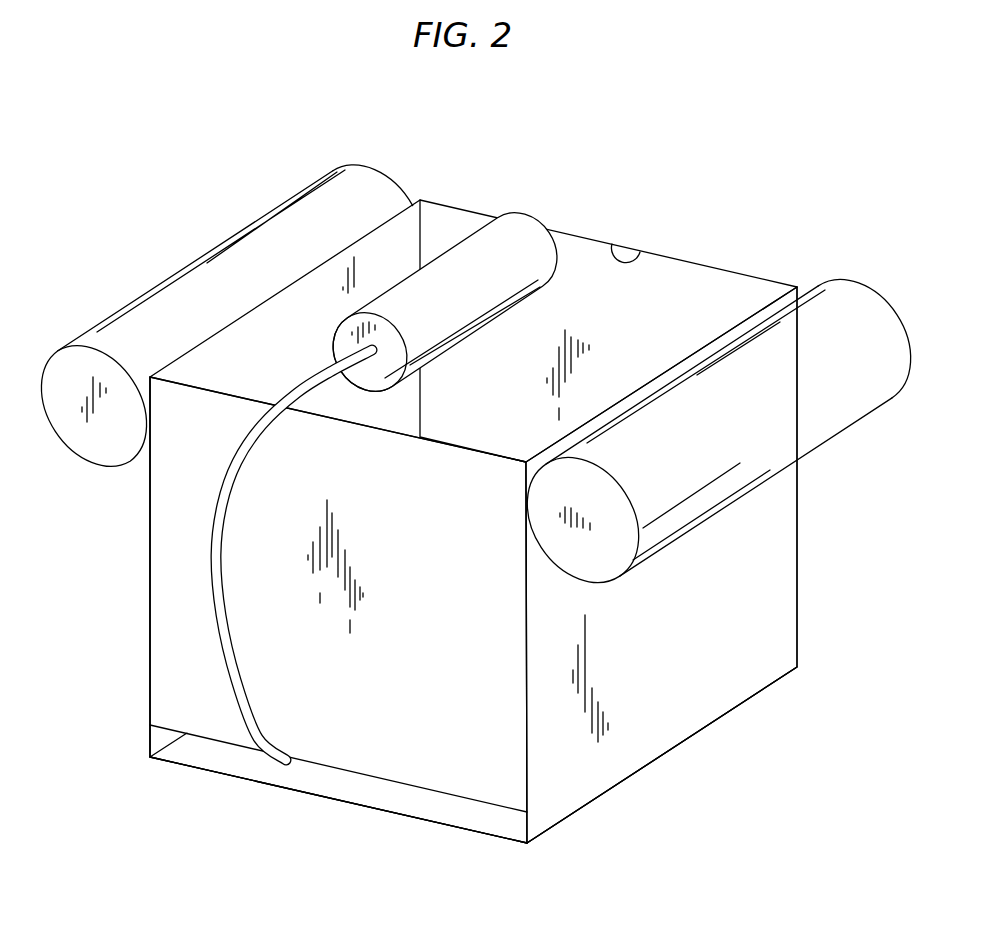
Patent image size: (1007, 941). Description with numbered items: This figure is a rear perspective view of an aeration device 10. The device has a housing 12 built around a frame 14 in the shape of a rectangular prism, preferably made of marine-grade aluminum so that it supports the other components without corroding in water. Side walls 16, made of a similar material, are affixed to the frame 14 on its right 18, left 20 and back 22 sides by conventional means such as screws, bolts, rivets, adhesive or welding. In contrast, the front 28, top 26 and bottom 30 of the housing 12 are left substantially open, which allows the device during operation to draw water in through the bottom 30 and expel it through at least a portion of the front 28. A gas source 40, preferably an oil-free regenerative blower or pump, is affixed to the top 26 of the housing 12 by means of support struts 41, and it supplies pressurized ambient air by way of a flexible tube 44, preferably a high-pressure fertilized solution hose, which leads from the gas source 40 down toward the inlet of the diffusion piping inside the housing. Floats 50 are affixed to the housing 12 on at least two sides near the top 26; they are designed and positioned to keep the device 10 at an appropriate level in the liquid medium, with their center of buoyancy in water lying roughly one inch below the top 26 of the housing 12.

The device 10 is at (178, 109).
The housing 12 is at (441, 515).
The frame 14 is at (150, 570).
The side walls 16 is at (414, 216).
The right side 18 is at (729, 742).
The left side 20 is at (121, 489).
The back side 22 is at (232, 827).
The top 26 is at (439, 169).
The front 28 is at (739, 227).
The bottom 30 is at (477, 856).
The gas source 40 is at (513, 227).
The support struts 41 is at (633, 260).
The flexible tube 44 is at (238, 693).
The floats 50 is at (260, 243).